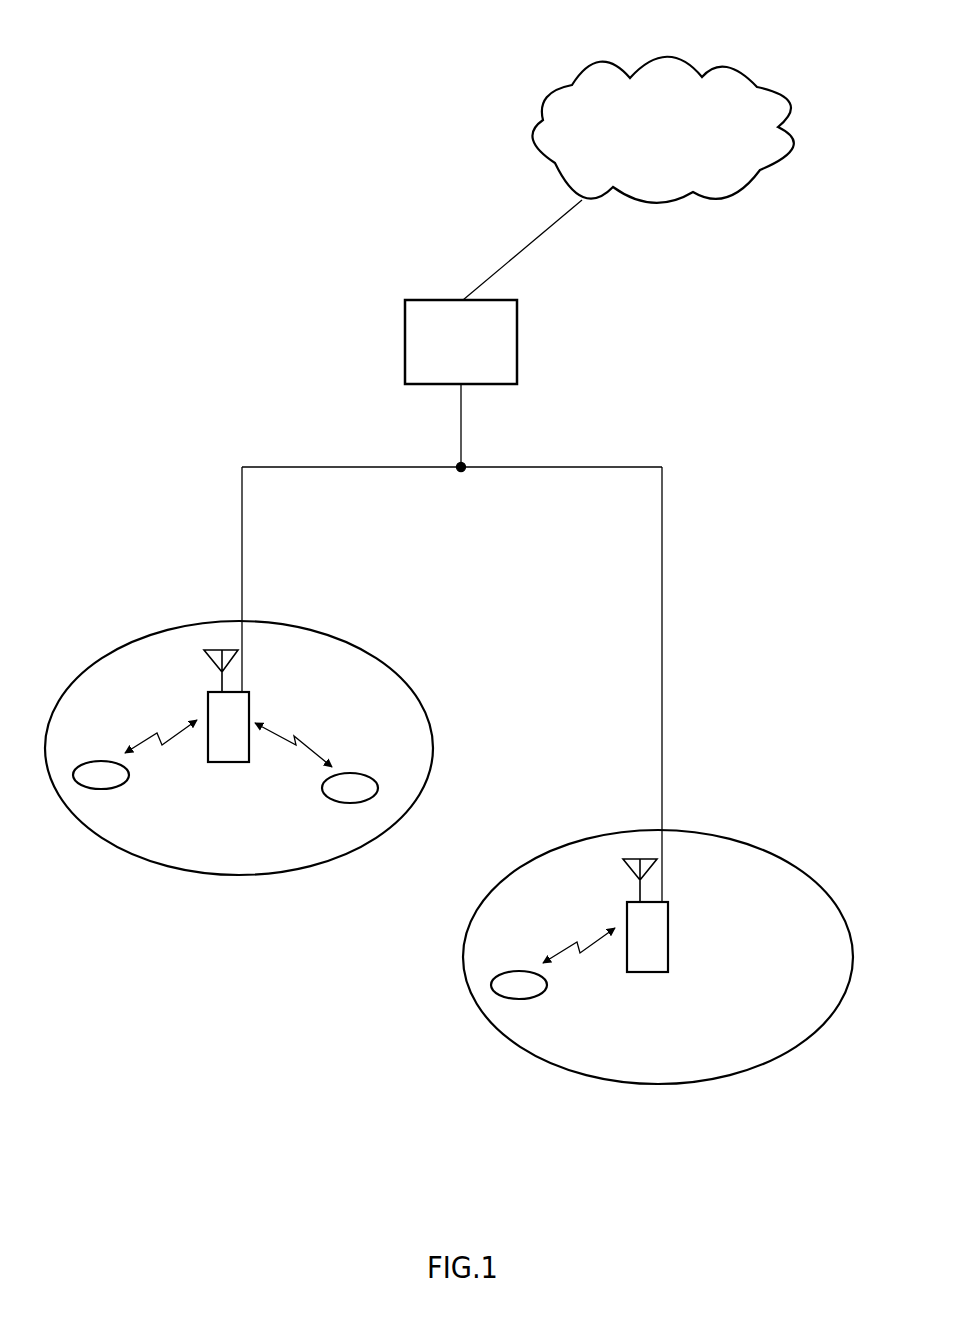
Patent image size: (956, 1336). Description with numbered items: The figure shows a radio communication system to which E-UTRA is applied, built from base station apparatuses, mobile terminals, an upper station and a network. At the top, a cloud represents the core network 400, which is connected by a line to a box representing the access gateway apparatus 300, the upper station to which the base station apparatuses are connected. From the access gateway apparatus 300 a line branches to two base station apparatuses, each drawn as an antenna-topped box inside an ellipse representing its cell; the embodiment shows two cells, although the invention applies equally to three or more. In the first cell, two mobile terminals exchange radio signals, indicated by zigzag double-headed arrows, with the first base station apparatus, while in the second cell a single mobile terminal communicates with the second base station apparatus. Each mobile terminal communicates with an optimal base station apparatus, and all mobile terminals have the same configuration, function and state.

The core network 400 is at (713, 65).
The access gateway apparatus 300 is at (517, 340).